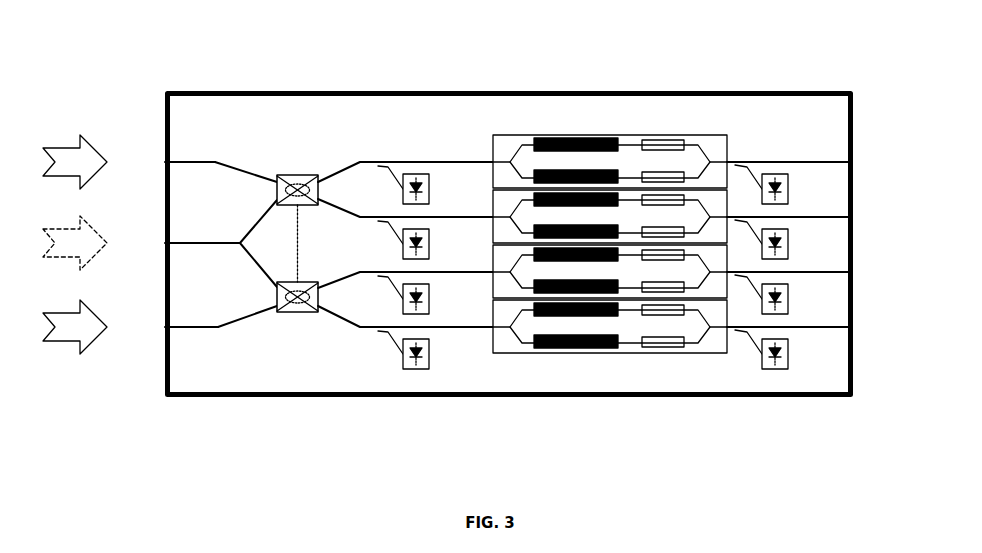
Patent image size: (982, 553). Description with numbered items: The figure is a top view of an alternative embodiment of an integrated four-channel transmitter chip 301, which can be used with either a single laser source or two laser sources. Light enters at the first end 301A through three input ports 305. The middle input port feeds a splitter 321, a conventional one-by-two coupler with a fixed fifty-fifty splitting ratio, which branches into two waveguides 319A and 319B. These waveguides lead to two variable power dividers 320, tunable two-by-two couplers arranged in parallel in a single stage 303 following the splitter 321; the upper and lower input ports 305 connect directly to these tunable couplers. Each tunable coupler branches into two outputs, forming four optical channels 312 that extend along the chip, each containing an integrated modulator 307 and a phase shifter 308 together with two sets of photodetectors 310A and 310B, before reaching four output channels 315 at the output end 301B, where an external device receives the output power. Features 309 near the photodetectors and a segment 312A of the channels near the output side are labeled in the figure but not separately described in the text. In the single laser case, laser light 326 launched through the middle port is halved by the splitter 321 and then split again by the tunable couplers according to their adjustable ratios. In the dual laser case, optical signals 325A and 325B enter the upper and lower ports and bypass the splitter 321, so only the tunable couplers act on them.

The integrated transmitter chip 301 is at (808, 125).
The first end 301A is at (177, 60).
The output end 301B is at (845, 63).
The single stage 303 is at (277, 340).
The input ports 305 is at (142, 408).
The integrated modulator 307 is at (540, 355).
The phase shifter 308 is at (640, 355).
The optical taps 309 is at (392, 168).
The first set of photodetectors 310A is at (415, 403).
The second set of photodetectors 310B is at (773, 403).
The optical channels 312 is at (412, 158).
The output waveguides 312A is at (778, 158).
The output channels 315 is at (854, 367).
The waveguide 319A is at (258, 222).
The waveguide 319B is at (258, 265).
The variable power dividers 320 is at (298, 243).
The splitter 321 is at (236, 247).
The optical signal 325A is at (73, 153).
The optical signal 325B is at (68, 341).
The laser light 326 is at (68, 248).